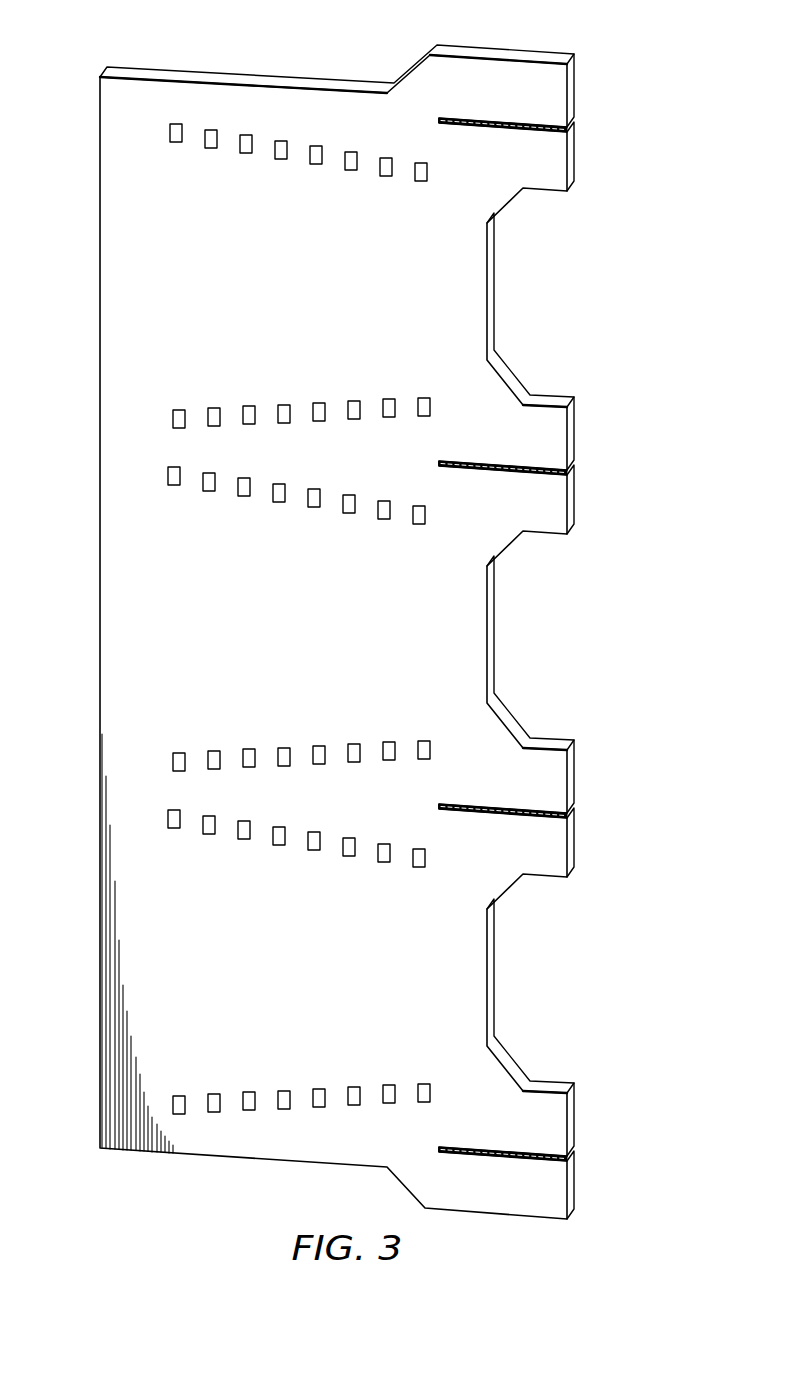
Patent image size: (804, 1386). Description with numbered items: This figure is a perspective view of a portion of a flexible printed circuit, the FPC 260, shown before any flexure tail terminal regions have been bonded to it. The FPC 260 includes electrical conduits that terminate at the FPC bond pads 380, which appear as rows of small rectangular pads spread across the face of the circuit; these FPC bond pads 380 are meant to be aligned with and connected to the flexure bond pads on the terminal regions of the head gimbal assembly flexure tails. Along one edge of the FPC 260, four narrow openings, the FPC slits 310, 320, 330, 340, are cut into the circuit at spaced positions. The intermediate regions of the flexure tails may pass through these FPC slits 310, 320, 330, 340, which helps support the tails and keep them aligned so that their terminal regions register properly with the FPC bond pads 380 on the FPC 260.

The flexible printed circuit 260 is at (118, 312).
The FPC slit 310 is at (570, 130).
The FPC slit 320 is at (570, 473).
The FPC slit 330 is at (570, 816).
The FPC slit 340 is at (570, 1159).
The FPC bond pads 380 is at (175, 132).